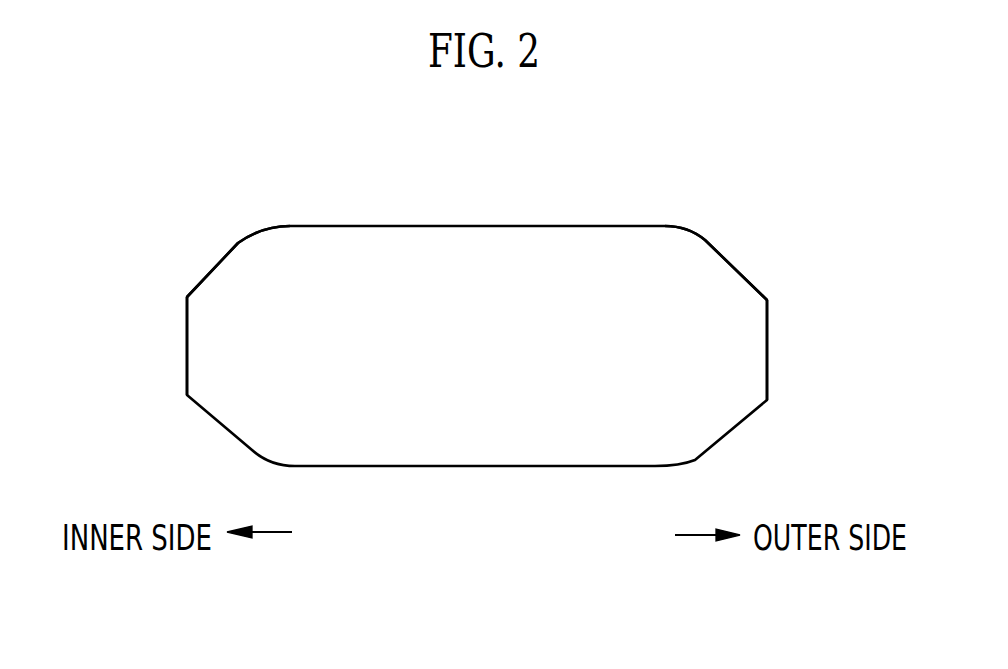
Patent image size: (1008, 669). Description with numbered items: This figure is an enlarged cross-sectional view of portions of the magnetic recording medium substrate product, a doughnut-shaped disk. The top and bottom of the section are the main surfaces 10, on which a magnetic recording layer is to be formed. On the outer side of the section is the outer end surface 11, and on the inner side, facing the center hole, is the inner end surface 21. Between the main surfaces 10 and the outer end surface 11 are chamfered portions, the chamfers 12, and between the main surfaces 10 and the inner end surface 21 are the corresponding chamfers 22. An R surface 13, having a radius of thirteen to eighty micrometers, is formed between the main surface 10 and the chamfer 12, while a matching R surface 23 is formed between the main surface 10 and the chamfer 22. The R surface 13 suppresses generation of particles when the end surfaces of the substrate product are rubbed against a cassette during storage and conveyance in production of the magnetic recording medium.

The main surface 10 is at (582, 225).
The outer end surface 11 is at (768, 348).
The chamfer 12 is at (747, 277).
The R surface 13 is at (700, 238).
The inner end surface 21 is at (183, 342).
The chamfer 22 is at (213, 268).
The R surface 23 is at (253, 232).